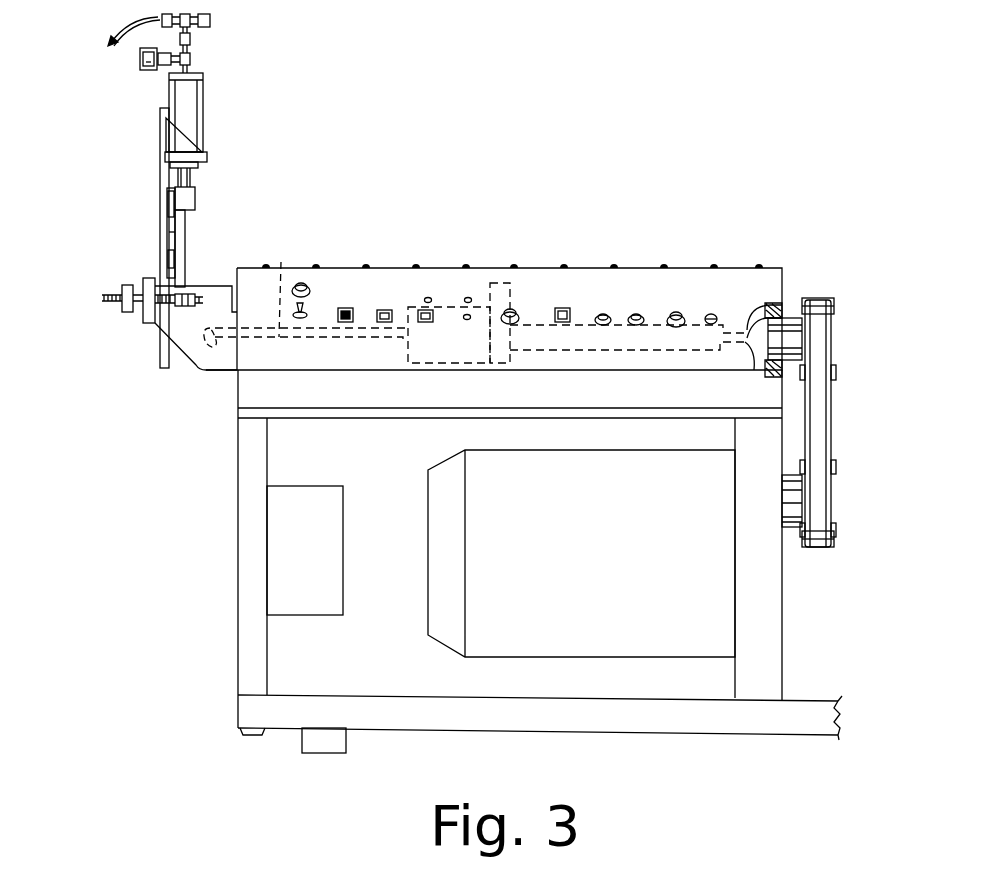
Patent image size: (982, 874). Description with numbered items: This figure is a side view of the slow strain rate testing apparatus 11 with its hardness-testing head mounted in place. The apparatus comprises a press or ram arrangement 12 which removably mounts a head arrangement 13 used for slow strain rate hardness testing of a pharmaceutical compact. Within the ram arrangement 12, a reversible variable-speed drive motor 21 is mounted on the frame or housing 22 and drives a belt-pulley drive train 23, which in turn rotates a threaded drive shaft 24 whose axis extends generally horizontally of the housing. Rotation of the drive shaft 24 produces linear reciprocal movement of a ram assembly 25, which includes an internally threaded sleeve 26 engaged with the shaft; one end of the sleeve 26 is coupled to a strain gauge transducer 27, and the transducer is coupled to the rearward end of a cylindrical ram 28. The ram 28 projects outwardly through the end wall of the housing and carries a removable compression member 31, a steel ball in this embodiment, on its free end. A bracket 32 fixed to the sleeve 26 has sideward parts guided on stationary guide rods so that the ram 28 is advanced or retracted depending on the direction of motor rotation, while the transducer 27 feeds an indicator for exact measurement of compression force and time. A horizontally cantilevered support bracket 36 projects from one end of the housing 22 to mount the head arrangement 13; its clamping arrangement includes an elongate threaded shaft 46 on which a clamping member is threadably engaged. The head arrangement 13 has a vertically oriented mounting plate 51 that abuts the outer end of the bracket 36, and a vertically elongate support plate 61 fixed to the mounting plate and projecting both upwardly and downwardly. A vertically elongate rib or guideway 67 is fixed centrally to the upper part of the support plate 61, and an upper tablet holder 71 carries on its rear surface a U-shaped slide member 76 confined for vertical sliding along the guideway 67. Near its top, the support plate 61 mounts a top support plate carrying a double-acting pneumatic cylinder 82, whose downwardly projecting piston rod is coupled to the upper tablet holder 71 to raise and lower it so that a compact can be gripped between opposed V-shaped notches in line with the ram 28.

The slow strain rate testing apparatus 11 is at (380, 90).
The ram arrangement 12 is at (596, 254).
The head arrangement 13 is at (124, 186).
The drive motor 21 is at (482, 642).
The housing 22 is at (256, 454).
The belt-pulley drive train 23 is at (814, 433).
The threaded drive shaft 24 is at (731, 330).
The ram assembly 25 is at (552, 352).
The internally threaded sleeve 26 is at (685, 335).
The strain gauge transducer 27 is at (448, 317).
The cylindrical ram 28 is at (281, 262).
The compression member 31 is at (212, 352).
The bracket 32 is at (498, 292).
The support bracket 36 is at (194, 358).
The threaded shaft 46 is at (118, 294).
The mounting plate 51 is at (148, 318).
The support plate 61 is at (158, 178).
The guideway 67 is at (166, 205).
The upper tablet holder 71 is at (186, 238).
The slide member 76 is at (172, 232).
The pneumatic cylinder 82 is at (196, 99).